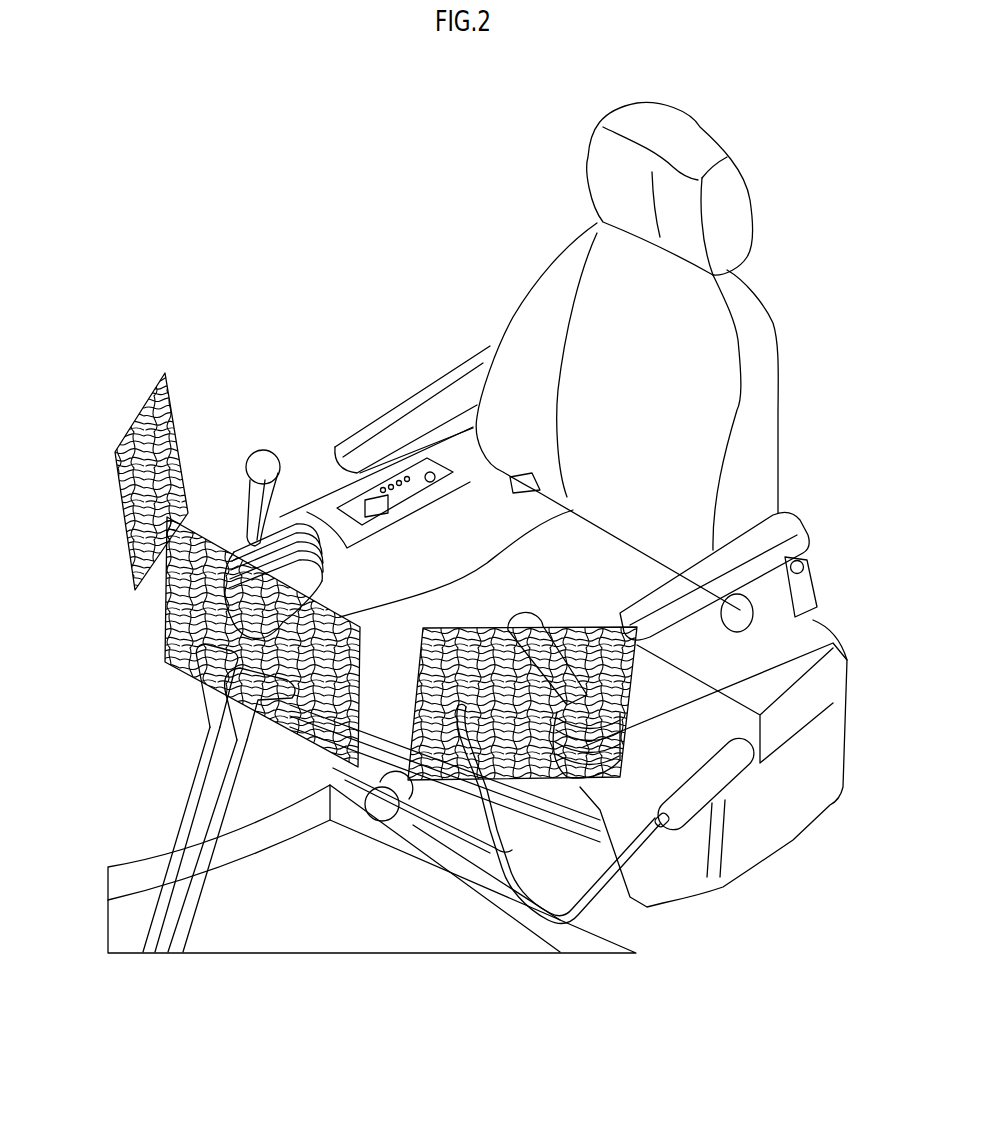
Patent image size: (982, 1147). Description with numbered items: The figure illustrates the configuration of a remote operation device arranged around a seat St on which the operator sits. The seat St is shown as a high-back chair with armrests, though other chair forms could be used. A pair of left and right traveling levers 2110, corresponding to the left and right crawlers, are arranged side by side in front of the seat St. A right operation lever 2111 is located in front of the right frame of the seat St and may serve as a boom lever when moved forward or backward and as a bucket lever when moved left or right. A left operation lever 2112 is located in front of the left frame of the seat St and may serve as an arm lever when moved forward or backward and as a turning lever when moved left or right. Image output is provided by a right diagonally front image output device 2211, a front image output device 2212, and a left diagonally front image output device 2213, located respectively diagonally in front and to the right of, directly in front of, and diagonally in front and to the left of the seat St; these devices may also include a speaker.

The seat St is at (357, 200).
The traveling levers 2110 is at (181, 797).
The right operation lever 2111 is at (262, 448).
The left operation lever 2112 is at (523, 609).
The right diagonally front image output device 2211 is at (123, 497).
The front image output device 2212 is at (167, 605).
The left diagonally front image output device 2213 is at (633, 668).